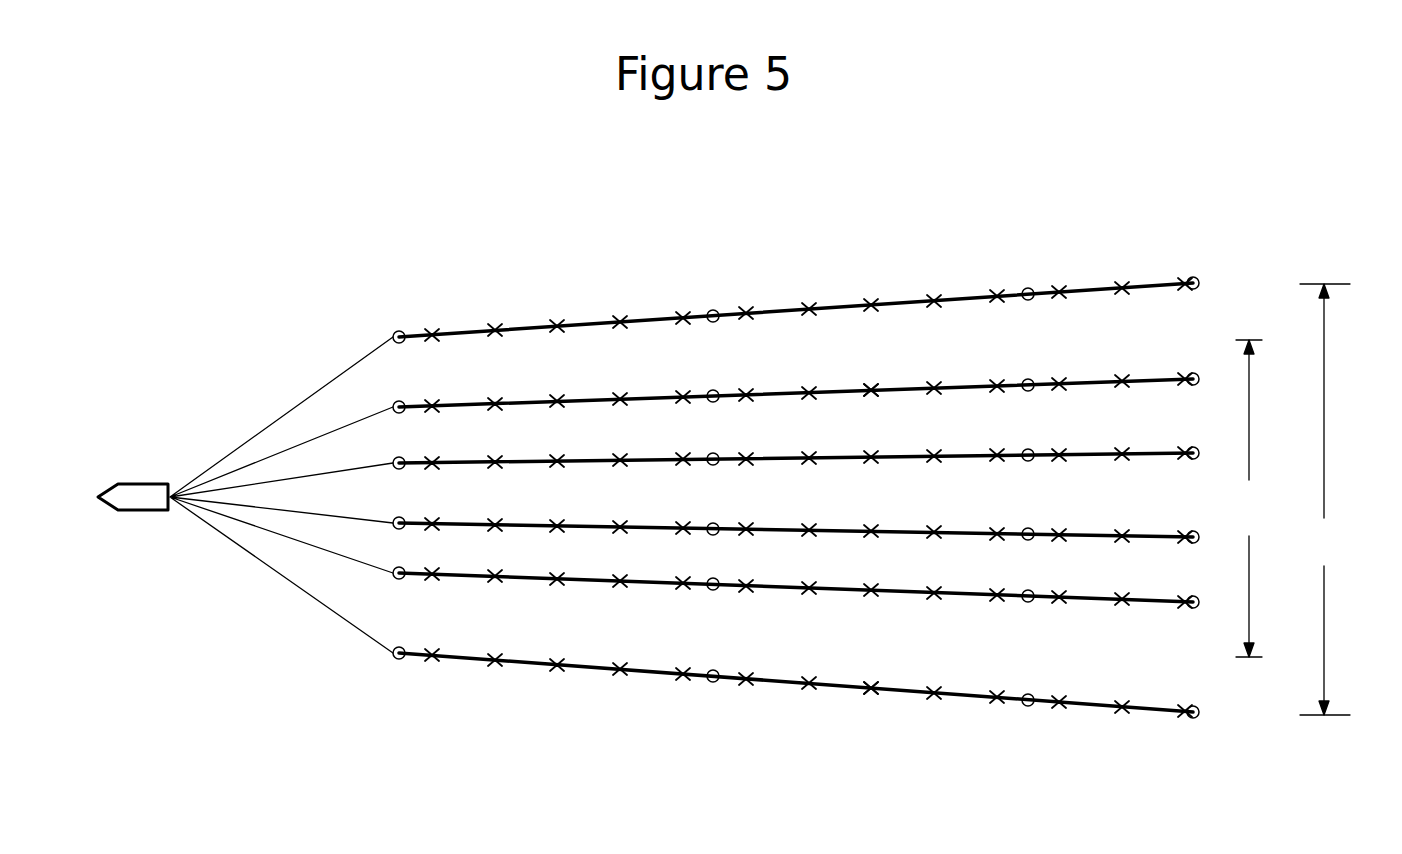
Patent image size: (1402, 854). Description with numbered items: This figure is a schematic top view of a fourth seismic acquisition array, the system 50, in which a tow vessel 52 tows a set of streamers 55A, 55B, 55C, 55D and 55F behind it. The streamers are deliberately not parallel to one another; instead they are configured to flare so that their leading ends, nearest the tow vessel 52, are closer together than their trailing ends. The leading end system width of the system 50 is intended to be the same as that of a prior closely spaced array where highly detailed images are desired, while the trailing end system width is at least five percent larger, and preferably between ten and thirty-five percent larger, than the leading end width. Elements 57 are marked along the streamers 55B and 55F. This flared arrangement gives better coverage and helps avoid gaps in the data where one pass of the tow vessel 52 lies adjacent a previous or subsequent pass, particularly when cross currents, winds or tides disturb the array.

The system 50 is at (960, 258).
The tow vessel 52 is at (130, 497).
The streamer 55A is at (523, 330).
The streamer 55B is at (523, 402).
The streamer 55C is at (523, 461).
The streamer 55D is at (523, 525).
The streamer 55F is at (578, 666).
The seismic receiver / sensor 57 is at (873, 388).